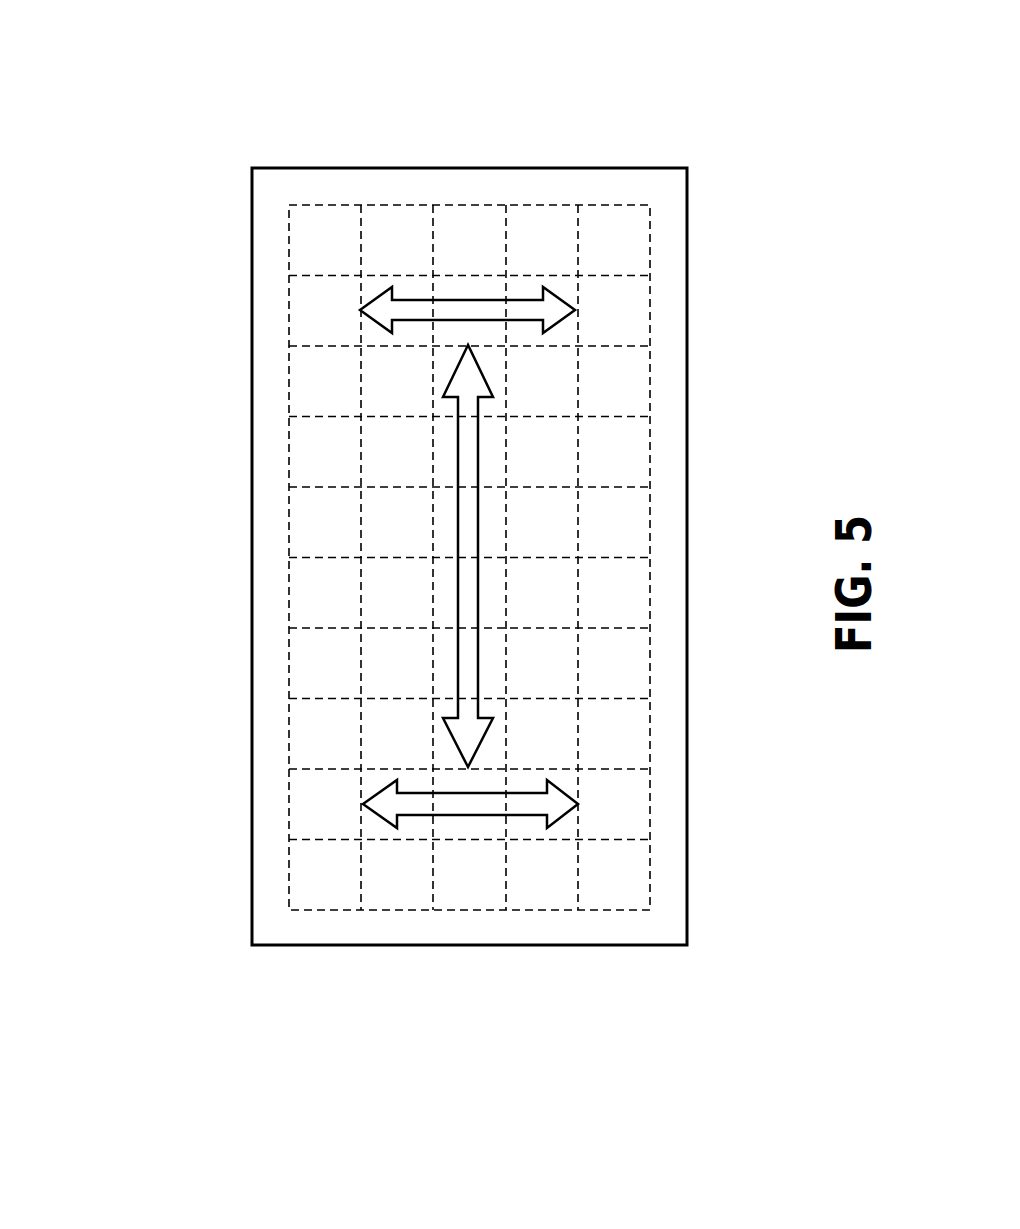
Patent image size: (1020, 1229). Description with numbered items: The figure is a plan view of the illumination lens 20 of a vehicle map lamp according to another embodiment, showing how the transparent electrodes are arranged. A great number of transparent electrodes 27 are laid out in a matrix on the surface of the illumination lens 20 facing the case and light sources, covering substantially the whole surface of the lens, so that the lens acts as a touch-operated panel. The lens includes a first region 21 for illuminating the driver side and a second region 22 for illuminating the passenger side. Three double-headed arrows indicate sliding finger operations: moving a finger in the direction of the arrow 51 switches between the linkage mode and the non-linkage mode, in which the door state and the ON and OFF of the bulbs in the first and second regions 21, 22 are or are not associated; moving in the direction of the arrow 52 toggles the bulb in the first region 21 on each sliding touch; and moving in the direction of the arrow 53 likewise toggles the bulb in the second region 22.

The illumination lens 20 is at (252, 227).
The first region 21 is at (320, 380).
The second region 22 is at (318, 678).
The transparent electrodes 27 is at (318, 205).
The arrow 51 is at (459, 590).
The arrow 52 is at (480, 300).
The arrow 53 is at (470, 815).